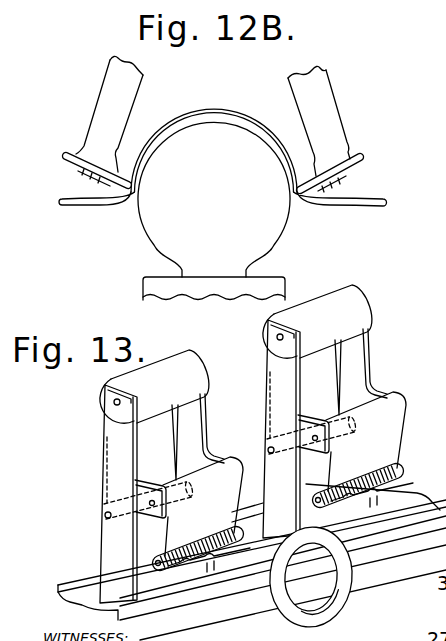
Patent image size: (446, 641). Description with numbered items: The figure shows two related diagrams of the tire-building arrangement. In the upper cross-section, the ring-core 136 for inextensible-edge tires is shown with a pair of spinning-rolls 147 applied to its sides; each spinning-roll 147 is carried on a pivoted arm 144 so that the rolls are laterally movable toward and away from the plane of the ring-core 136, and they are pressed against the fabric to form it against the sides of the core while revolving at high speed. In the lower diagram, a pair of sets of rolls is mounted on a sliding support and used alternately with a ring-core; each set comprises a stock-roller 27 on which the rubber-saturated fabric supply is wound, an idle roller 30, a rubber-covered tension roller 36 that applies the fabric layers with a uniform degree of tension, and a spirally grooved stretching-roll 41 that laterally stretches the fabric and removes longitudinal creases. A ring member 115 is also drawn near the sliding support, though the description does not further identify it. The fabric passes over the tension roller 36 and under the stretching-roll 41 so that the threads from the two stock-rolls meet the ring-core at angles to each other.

In FIG. 12B, the ring-core 136 is at (223, 204).
In FIG. 12B, the arm 144 is at (108, 80).
In FIG. 12B, the spinning-roll 147 is at (68, 150).
In FIG. 13, the stock-roller 27 is at (195, 362).
In FIG. 13, the idle roller 30 is at (104, 505).
In FIG. 13, the tension roller 36 is at (226, 471).
In FIG. 13, the stretching-roll 41 is at (214, 560).
In FIG. 13, the ring 115 is at (349, 603).